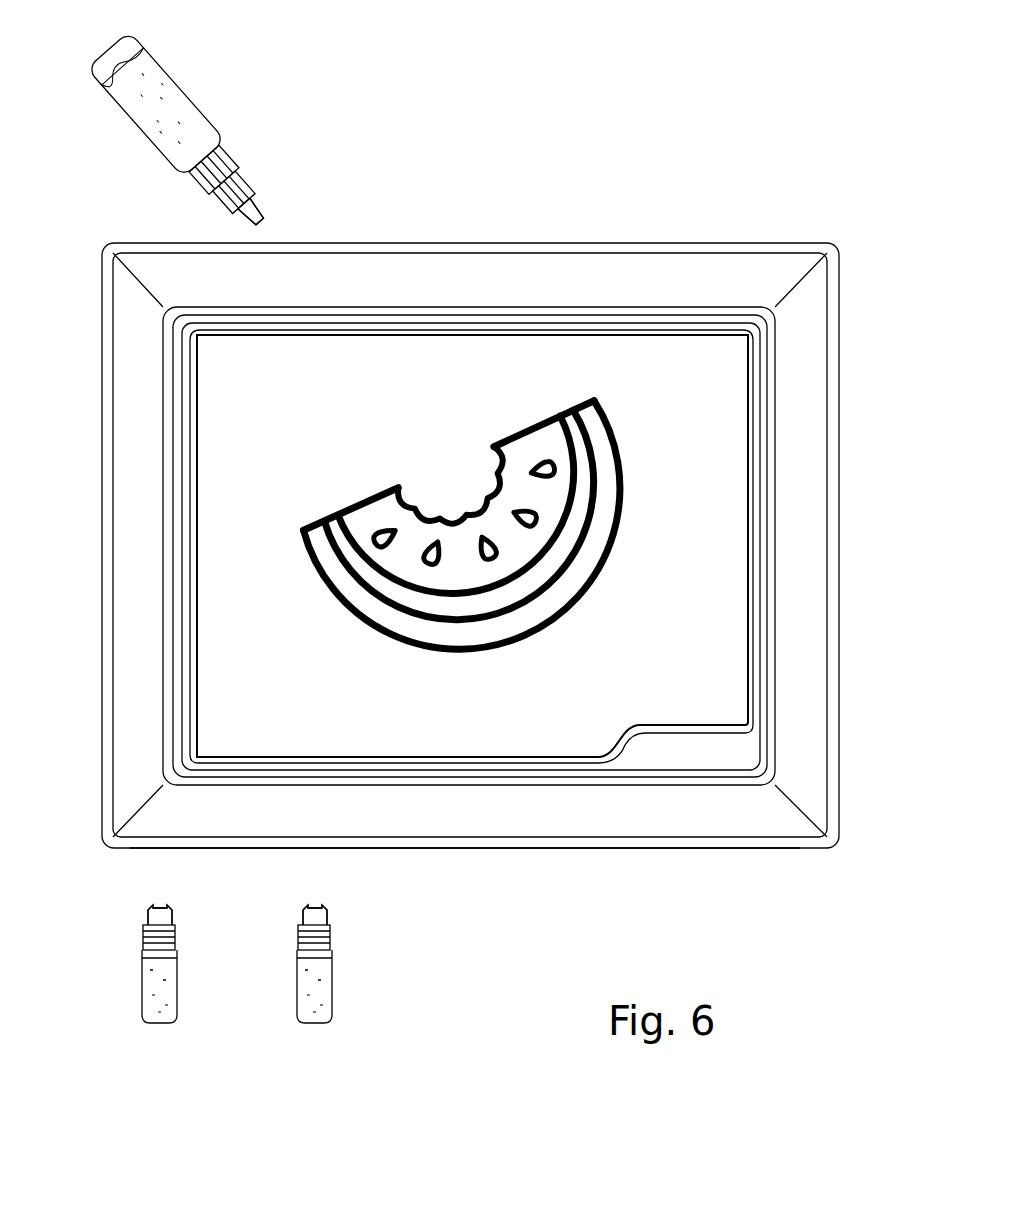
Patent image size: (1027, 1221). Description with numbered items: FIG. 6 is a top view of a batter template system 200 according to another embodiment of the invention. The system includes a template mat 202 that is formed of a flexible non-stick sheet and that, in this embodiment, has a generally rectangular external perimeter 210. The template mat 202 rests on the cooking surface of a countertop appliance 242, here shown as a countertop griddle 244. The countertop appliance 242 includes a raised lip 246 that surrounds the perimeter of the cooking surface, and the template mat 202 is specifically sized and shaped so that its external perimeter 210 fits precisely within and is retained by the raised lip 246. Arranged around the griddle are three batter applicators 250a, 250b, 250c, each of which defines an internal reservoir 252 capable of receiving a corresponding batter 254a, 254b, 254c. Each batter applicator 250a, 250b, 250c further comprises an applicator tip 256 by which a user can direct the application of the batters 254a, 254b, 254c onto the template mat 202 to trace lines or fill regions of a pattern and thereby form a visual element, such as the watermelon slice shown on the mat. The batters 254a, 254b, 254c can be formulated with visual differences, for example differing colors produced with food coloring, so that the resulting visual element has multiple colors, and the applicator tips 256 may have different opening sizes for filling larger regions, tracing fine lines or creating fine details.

The batter template system 200 is at (828, 145).
The template mat 202 is at (745, 573).
The external perimeter 210 is at (745, 433).
The countertop appliance 242 is at (840, 712).
The countertop griddle 244 is at (697, 848).
The raised lip 246 is at (706, 323).
The batter applicator 250a is at (207, 100).
The batter applicator 250b is at (150, 1000).
The batter applicator 250c is at (332, 1005).
The internal reservoir 252 is at (170, 97).
The batter 254a is at (170, 127).
The batter 254b is at (145, 980).
The batter 254c is at (300, 985).
The applicator tip 256 is at (270, 210).